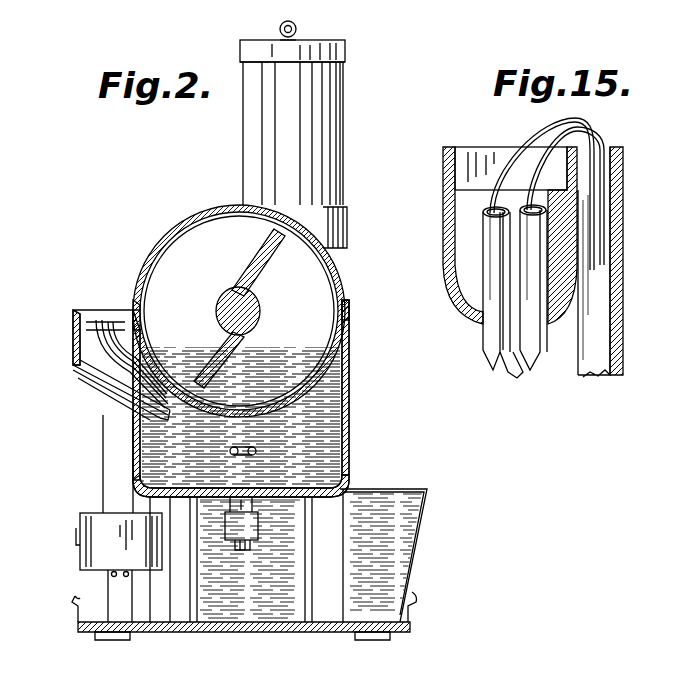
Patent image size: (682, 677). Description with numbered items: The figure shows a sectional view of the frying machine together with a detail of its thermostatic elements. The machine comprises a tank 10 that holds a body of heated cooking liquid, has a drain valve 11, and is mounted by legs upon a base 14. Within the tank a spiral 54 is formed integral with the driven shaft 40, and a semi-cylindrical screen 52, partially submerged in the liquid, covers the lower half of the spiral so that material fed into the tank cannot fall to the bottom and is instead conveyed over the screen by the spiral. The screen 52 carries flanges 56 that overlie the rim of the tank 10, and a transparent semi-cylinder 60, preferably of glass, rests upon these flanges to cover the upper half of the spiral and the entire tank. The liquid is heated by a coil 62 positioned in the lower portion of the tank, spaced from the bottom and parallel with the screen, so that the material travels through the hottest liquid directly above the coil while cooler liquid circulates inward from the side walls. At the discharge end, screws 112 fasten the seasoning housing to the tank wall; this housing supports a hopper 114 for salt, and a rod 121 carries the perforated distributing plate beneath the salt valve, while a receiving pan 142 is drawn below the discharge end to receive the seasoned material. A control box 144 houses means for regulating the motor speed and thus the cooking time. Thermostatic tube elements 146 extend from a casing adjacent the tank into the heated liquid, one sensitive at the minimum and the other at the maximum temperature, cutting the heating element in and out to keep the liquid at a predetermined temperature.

In FIG. 2, the tank 10 is at (350, 425).
In FIG. 2, the drain valve 11 is at (240, 522).
In FIG. 2, the base 14 is at (392, 615).
In FIG. 2, the driven shaft 40 is at (255, 317).
In FIG. 2, the screen 52 is at (241, 416).
In FIG. 2, the spiral 54 is at (272, 245).
In FIG. 2, the flanges 56 is at (134, 310).
In FIG. 2, the semi-cylinder 60 is at (203, 212).
In FIG. 2, the coil 62 is at (243, 446).
In FIG. 2, the screws 112 is at (350, 225).
In FIG. 2, the hopper 114 is at (352, 133).
In FIG. 2, the rod 121 is at (335, 562).
In FIG. 2, the pan 142 is at (410, 512).
In FIG. 2, the control box 144 is at (113, 538).
In FIG. 2, the thermostatic tube elements 146 is at (130, 411).
In FIG. 15, the thermostatic tube elements 146 is at (517, 378).